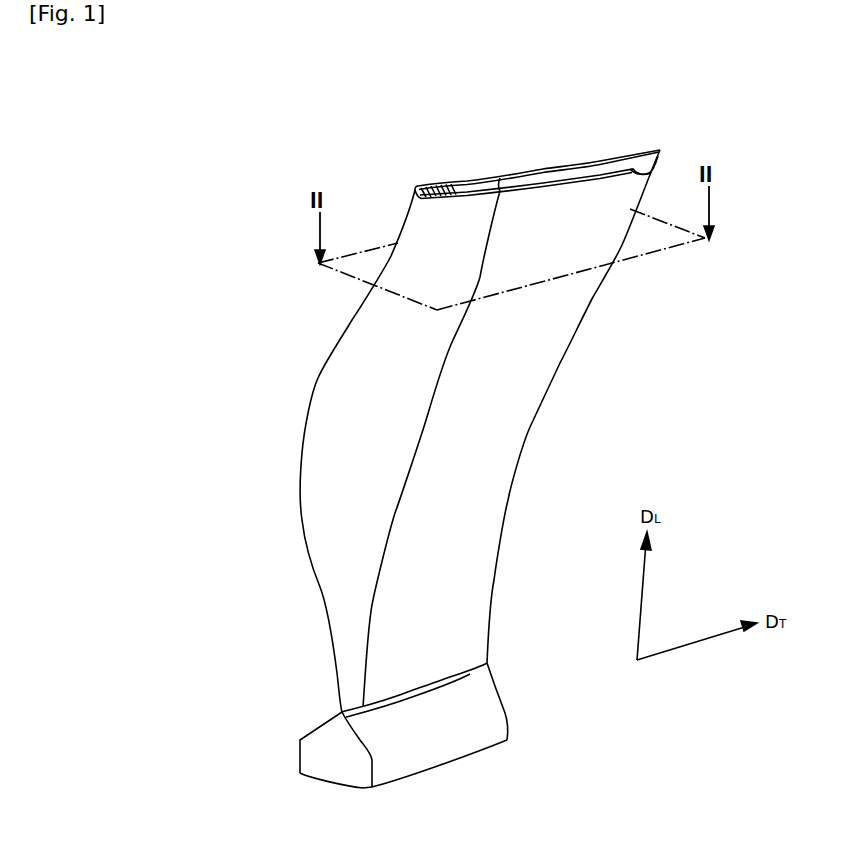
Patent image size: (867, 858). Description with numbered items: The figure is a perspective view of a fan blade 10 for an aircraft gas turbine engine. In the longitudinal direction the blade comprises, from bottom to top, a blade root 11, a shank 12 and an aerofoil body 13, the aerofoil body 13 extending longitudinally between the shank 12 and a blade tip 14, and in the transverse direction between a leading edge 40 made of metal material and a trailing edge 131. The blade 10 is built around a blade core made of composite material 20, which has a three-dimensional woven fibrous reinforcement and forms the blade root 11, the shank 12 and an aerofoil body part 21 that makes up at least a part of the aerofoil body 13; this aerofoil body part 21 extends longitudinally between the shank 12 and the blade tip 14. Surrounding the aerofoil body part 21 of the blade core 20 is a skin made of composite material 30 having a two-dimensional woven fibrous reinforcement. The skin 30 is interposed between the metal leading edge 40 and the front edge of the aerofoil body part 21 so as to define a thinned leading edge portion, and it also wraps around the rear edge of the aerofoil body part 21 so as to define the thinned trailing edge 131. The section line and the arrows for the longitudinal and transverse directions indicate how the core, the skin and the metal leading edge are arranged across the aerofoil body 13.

The fan blade 10 is at (474, 448).
The blade root 11 is at (430, 719).
The shank 12 is at (441, 684).
The aerofoil body 13 is at (456, 431).
The trailing edge 131 is at (573, 406).
The blade tip 14 is at (474, 458).
The blade core made of composite material 20 is at (453, 458).
The aerofoil body part 21 is at (486, 161).
The skin made of composite material 30 is at (665, 150).
The leading edge made of metal material 40 is at (334, 451).